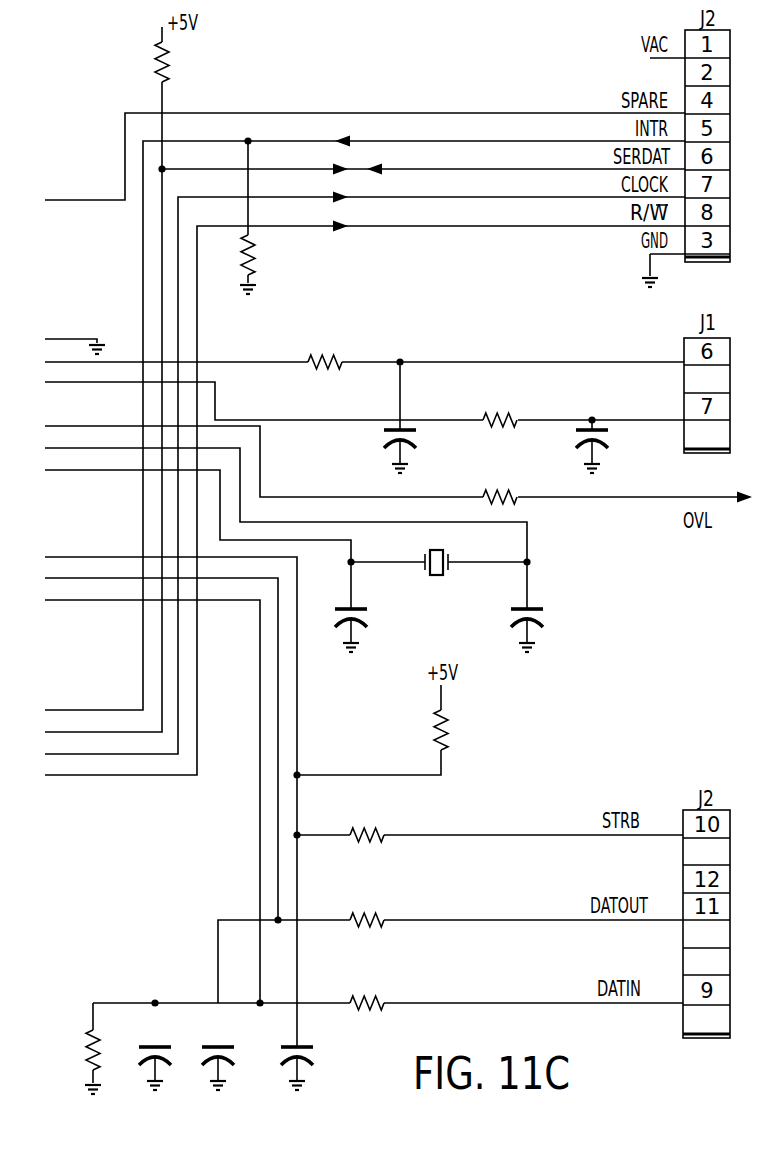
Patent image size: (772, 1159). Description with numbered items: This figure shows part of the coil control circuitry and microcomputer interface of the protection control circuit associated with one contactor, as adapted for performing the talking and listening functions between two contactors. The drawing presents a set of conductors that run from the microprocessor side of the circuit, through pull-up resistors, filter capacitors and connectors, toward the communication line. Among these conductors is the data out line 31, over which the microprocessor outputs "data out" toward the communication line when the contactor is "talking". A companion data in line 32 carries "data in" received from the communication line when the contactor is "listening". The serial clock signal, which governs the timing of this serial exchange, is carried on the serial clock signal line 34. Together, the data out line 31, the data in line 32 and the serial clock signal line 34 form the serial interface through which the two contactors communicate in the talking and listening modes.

The data out line 31 is at (93, 580).
The data in line 32 is at (260, 893).
The serial clock signal line 34 is at (133, 556).